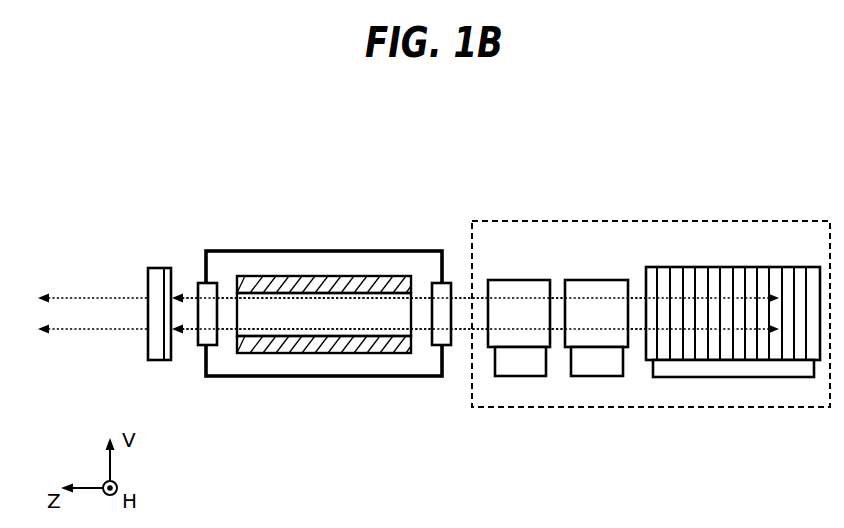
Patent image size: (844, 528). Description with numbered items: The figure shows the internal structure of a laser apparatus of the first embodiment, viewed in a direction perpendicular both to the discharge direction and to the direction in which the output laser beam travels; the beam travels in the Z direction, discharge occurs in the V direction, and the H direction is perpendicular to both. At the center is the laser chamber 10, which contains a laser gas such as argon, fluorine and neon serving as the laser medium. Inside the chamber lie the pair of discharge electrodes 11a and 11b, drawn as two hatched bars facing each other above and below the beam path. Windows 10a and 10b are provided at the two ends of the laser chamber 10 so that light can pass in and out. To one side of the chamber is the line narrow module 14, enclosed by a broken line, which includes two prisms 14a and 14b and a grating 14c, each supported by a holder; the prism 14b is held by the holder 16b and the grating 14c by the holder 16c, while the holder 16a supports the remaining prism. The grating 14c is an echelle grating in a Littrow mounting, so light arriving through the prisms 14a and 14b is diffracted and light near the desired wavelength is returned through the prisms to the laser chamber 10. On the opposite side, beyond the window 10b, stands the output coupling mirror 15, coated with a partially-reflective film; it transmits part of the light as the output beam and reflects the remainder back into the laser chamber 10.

The laser chamber 10 is at (310, 250).
The window 10a is at (436, 283).
The window 10b is at (208, 282).
The discharge electrode 11a is at (310, 277).
The discharge electrode 11b is at (310, 353).
The line narrow module 14 is at (695, 220).
The prism 14a is at (523, 280).
The prism 14b is at (602, 280).
The grating 14c is at (802, 267).
The output coupling mirror 15 is at (150, 268).
The holder 16a is at (520, 376).
The holder 16b is at (603, 376).
The holder 16c is at (790, 376).